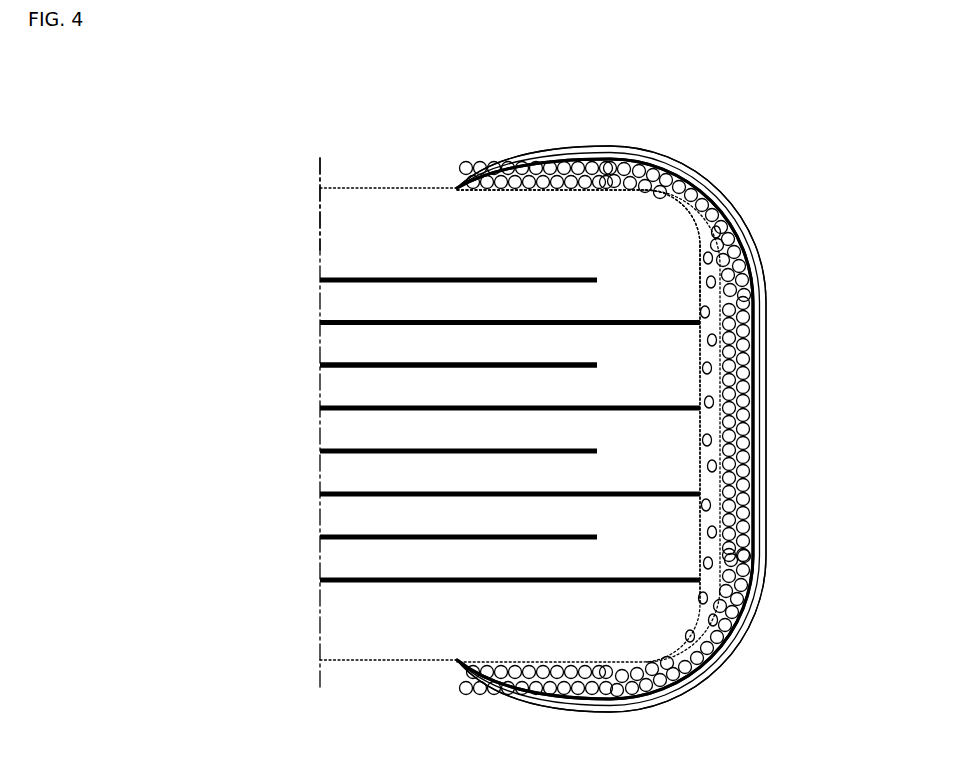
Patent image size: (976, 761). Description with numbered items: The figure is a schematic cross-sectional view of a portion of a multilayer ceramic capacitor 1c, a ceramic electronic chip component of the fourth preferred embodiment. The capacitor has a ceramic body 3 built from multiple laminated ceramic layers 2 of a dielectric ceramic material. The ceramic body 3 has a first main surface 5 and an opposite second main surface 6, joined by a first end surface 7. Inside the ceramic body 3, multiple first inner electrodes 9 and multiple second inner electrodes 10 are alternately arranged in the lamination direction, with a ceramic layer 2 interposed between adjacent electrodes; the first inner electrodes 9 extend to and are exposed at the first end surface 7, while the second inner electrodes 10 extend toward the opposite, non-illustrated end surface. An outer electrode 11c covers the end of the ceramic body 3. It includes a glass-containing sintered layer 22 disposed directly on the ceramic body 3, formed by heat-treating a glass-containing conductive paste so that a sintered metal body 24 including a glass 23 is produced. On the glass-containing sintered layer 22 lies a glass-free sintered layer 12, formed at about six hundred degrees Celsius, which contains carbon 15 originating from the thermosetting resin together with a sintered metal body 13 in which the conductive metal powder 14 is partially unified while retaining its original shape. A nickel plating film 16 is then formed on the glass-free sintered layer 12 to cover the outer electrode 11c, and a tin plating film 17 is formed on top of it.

The multilayer ceramic capacitor 1c is at (413, 81).
The ceramic layers 2 is at (326, 345).
The ceramic body 3 is at (320, 242).
The first main surface 5 is at (445, 188).
The second main surface 6 is at (343, 660).
The first end surface 7 is at (700, 423).
The first inner electrodes 9 is at (422, 583).
The second inner electrodes 10 is at (401, 365).
The outer electrode 11c is at (728, 190).
The glass-free sintered layer 12 is at (750, 303).
The sintered metal body 13 is at (737, 280).
The conductive metal powder 14 is at (747, 462).
The carbon 15 is at (730, 486).
The nickel plating film 16 is at (720, 640).
The tin plating film 17 is at (700, 683).
The glass-containing sintered layer 22 is at (720, 383).
The glass 23 is at (717, 532).
The sintered metal body 24 is at (713, 240).